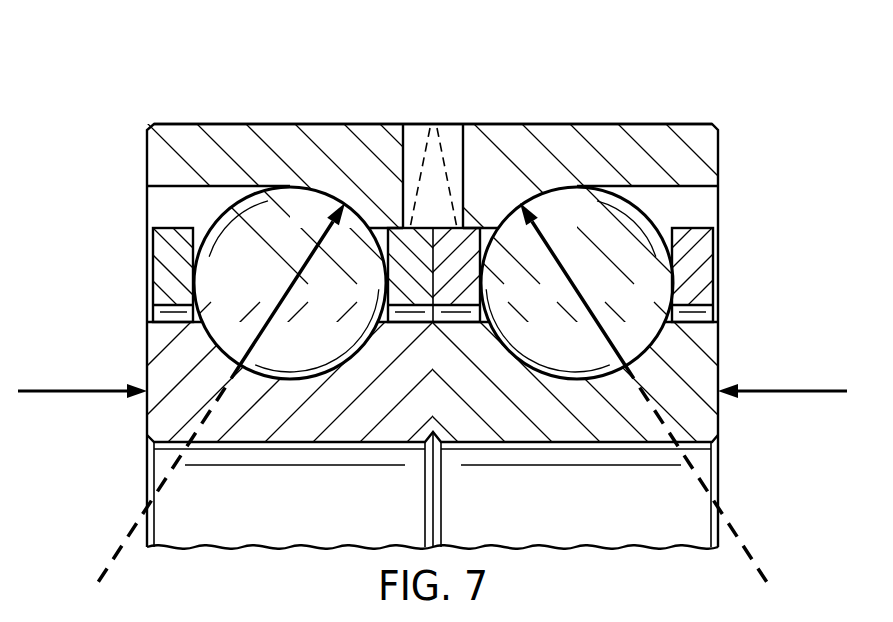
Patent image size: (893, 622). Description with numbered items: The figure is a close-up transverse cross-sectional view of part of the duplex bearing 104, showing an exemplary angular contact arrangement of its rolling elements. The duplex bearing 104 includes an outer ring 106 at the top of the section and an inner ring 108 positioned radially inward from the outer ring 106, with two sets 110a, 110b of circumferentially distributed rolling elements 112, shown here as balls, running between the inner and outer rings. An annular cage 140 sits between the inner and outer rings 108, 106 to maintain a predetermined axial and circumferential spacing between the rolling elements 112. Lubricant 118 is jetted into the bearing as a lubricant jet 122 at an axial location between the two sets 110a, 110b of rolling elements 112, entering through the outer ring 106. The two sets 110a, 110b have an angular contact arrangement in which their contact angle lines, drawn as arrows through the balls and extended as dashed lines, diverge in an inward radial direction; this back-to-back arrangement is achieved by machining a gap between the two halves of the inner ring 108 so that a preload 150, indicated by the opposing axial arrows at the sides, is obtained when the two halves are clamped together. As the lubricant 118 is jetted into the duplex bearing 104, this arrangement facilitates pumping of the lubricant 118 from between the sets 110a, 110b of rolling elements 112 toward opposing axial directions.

The duplex bearing 104 is at (132, 64).
The outer ring 106 is at (228, 133).
The inner ring 108 is at (153, 422).
The first set of rolling elements 110a is at (288, 207).
The second set of rolling elements 110b is at (577, 207).
The rolling elements 112 is at (433, 219).
The lubricant 118 is at (449, 141).
The lubricant jet 122 is at (447, 152).
The annular cage 140 is at (163, 273).
The preload 150 is at (61, 388).